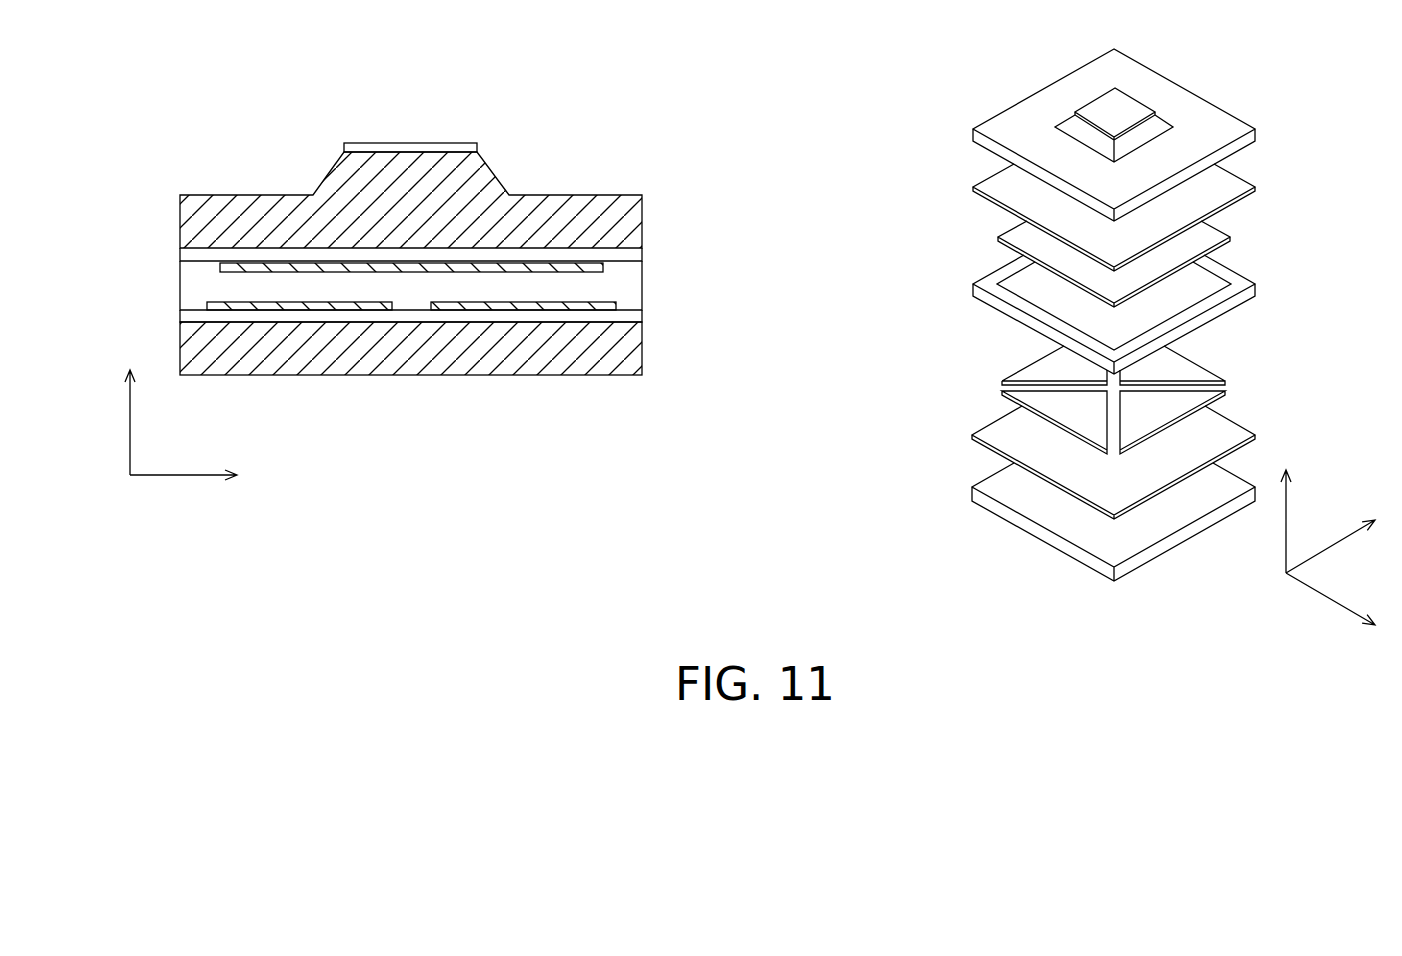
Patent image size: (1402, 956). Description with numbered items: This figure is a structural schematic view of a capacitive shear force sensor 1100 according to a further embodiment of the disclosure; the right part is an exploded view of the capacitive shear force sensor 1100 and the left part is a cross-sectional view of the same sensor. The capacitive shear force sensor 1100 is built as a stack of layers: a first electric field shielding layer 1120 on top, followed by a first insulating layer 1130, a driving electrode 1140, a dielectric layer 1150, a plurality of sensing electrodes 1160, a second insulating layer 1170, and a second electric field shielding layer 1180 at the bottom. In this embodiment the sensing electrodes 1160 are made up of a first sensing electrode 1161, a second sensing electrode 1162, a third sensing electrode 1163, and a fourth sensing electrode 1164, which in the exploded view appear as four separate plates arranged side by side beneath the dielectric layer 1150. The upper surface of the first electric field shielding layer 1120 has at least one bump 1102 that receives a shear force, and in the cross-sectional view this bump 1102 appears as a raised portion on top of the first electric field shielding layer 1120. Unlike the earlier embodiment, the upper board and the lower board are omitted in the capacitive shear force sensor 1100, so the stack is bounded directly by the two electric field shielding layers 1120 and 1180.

The capacitive shear force sensor 1100 is at (422, 407).
The bump 1102 is at (1050, 124).
The first electric field shielding layer 1120 is at (975, 134).
The first insulating layer 1130 is at (961, 191).
The driving electrode 1140 is at (986, 242).
The dielectric layer 1150 is at (961, 291).
The sensing electrodes 1160 is at (990, 389).
The first sensing electrode 1161 is at (243, 302).
The second sensing electrode 1162 is at (462, 305).
The third sensing electrode 1163 is at (1168, 405).
The fourth sensing electrode 1164 is at (1047, 369).
The second insulating layer 1170 is at (960, 440).
The second electric field shielding layer 1180 is at (643, 350).